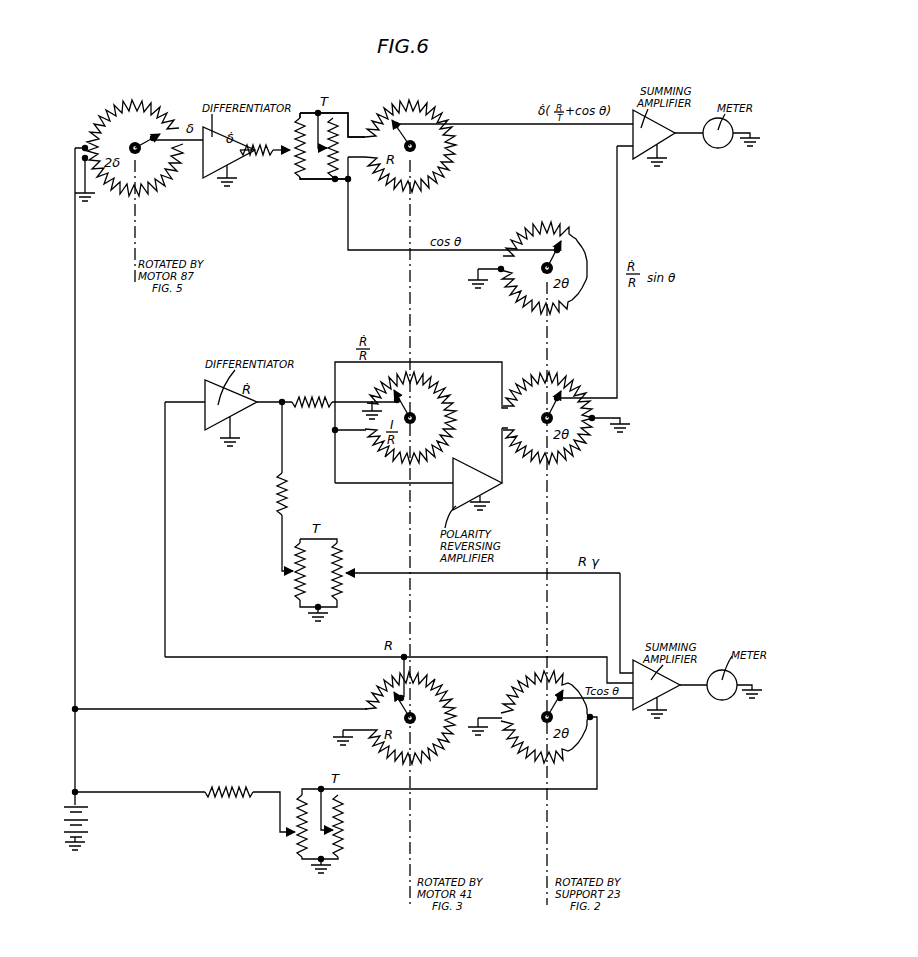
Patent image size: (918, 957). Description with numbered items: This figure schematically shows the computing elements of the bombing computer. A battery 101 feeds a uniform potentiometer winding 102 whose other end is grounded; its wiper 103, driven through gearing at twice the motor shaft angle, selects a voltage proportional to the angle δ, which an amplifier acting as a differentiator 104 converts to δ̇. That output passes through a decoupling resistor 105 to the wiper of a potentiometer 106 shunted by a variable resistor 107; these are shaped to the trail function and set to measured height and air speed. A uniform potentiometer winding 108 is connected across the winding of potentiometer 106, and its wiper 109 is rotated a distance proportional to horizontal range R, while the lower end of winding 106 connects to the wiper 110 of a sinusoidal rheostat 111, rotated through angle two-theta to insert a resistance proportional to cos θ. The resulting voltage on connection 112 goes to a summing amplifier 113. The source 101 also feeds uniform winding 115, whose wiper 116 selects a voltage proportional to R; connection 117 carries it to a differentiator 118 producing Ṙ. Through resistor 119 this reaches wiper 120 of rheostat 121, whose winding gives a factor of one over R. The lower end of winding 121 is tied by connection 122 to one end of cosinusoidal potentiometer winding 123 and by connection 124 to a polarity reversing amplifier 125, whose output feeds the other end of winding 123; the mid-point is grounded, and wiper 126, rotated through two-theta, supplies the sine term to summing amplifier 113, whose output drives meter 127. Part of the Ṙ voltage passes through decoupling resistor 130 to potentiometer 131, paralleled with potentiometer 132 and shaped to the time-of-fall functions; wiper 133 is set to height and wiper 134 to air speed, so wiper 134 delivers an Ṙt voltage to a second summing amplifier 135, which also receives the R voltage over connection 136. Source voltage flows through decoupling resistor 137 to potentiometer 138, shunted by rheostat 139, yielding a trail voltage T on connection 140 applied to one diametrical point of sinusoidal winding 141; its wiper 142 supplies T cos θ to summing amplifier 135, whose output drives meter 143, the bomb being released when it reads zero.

The battery 101 is at (89, 825).
The potentiometer winding 102 is at (113, 106).
The wiper 103 is at (150, 137).
The differentiator 104 is at (203, 170).
The decoupling resistor 105 is at (256, 146).
The potentiometer 106 is at (295, 169).
The variable resistor 107 is at (330, 170).
The potentiometer winding 108 is at (412, 97).
The wiper 109 is at (400, 129).
The wiper 110 is at (543, 268).
The rheostat 111 is at (537, 221).
The connection 112 is at (506, 124).
The summing amplifier 113 is at (634, 161).
The potentiometer winding 115 is at (448, 689).
The wiper 116 is at (405, 701).
The connection 117 is at (167, 610).
The differentiator 118 is at (205, 420).
The resistor 119 is at (319, 399).
The wiper 120 is at (401, 401).
The variable rheostat 121 is at (448, 402).
The connection 122 is at (440, 362).
The potentiometer winding 123 is at (560, 377).
The connection 124 is at (381, 487).
The polarity reversing amplifier 125 is at (475, 464).
The wiper 126 is at (545, 413).
The meter 127 is at (718, 148).
The decoupling resistor 130 is at (278, 496).
The potentiometer 131 is at (294, 591).
The potentiometer 132 is at (343, 591).
The wiper 133 is at (282, 560).
The wiper 134 is at (397, 572).
The summing amplifier 135 is at (633, 713).
The connection 136 is at (476, 655).
The decoupling resistor 137 is at (221, 790).
The potentiometer 138 is at (298, 808).
The variable rheostat 139 is at (343, 828).
The connection 140 is at (500, 789).
The potentiometer winding 141 is at (553, 676).
The wiper 142 is at (544, 714).
The meter 143 is at (717, 700).